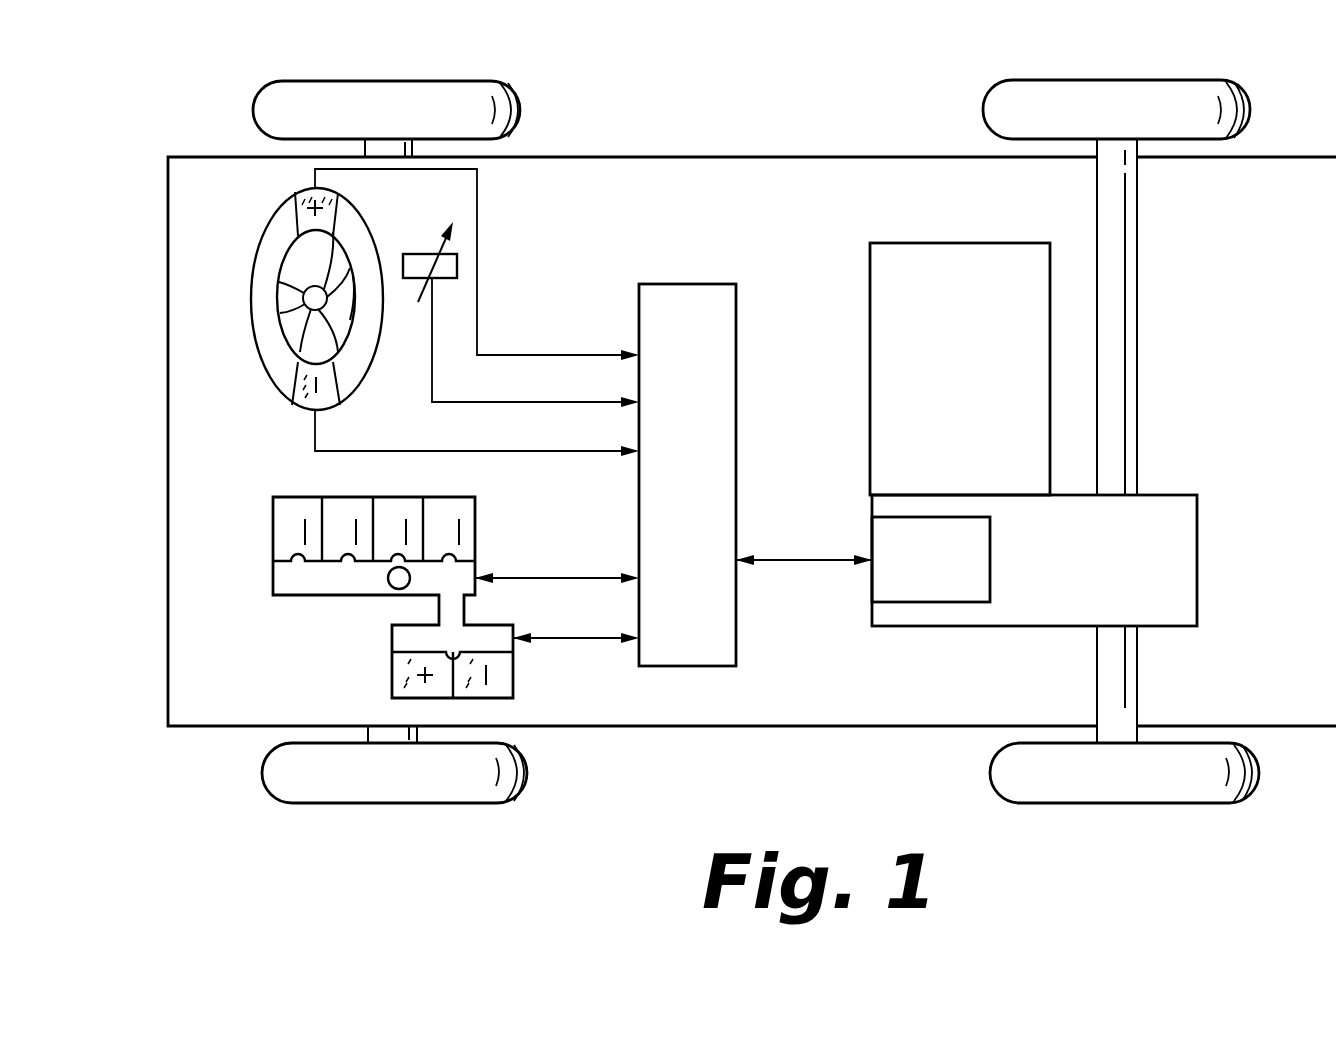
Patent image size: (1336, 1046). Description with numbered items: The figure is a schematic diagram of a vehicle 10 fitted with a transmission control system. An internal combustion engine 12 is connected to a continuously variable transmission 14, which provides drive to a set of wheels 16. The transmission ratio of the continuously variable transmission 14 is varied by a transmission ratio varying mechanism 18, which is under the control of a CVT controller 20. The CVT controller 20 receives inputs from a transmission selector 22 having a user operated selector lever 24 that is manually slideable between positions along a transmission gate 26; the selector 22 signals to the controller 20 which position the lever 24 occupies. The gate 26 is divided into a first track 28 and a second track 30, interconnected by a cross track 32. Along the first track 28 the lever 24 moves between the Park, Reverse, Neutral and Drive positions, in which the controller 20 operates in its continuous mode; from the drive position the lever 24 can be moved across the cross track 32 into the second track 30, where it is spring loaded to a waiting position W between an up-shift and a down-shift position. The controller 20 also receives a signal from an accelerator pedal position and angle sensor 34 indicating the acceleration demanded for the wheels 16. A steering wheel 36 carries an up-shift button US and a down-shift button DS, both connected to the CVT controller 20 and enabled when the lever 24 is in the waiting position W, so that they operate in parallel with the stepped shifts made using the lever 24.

The vehicle 10 is at (796, 140).
The internal combustion engine 12 is at (969, 375).
The continuously variable transmission 14 is at (1093, 573).
The wheels 16 is at (1123, 127).
The transmission ratio varying mechanism 18 is at (941, 572).
The CVT controller 20 is at (701, 510).
The transmission selector 22 is at (421, 597).
The selector lever 24 is at (397, 581).
The transmission gate 26 is at (376, 597).
The first track 28 is at (310, 584).
The second track 30 is at (483, 647).
The cross track 32 is at (450, 613).
The accelerator pedal position and angle sensor 34 is at (457, 266).
The steering wheel 36 is at (226, 293).
The up-shift button US is at (327, 193).
The down-shift button DS is at (308, 405).
The waiting position W is at (450, 639).